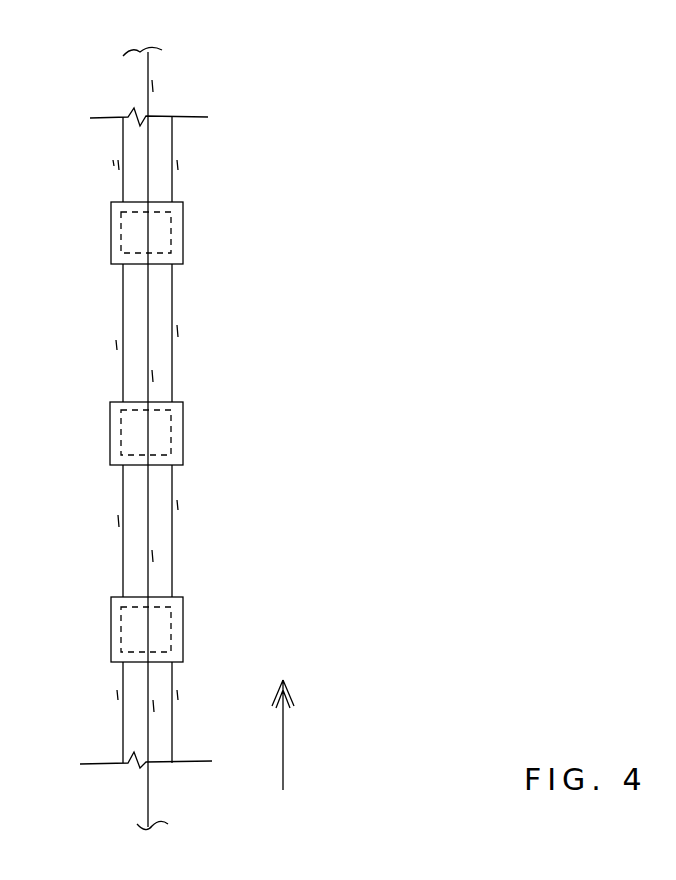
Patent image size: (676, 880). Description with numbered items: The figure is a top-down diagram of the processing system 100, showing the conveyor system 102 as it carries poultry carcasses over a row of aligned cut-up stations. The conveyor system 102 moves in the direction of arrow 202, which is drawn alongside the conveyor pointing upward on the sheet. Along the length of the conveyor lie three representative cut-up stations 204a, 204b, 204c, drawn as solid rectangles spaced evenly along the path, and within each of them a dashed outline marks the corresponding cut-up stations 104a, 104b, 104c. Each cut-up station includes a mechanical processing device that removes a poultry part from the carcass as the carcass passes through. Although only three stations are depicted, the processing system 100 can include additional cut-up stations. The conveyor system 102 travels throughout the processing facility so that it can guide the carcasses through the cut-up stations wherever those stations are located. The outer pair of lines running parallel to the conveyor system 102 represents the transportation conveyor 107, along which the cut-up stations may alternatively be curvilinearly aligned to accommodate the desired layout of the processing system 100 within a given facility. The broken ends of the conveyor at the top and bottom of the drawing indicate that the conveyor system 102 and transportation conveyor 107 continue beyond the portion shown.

The processing system 100 is at (346, 138).
The conveyor system 102 is at (120, 810).
The transportation conveyor 107 is at (194, 330).
The cut-up station 204a is at (183, 610).
The cut-up station 204b is at (183, 407).
The cut-up station 204c is at (183, 205).
The cut-up station 104a is at (187, 637).
The cut-up station 104b is at (187, 433).
The cut-up station 104c is at (185, 240).
The arrow 202 is at (283, 763).